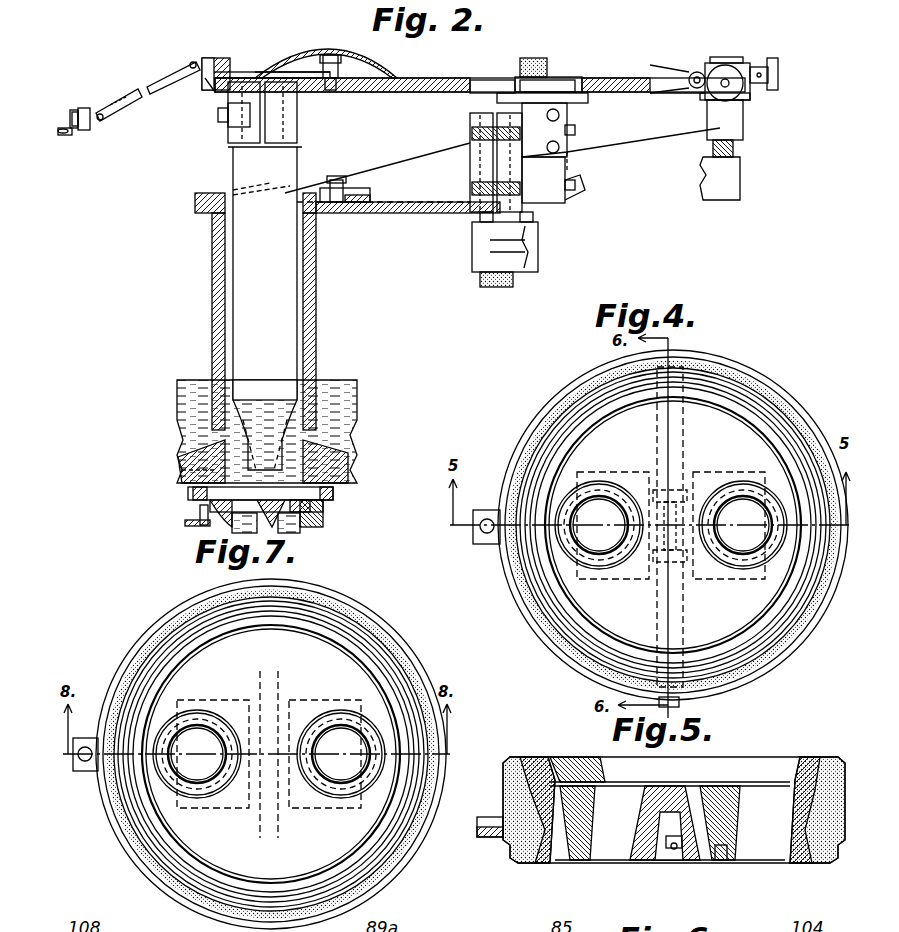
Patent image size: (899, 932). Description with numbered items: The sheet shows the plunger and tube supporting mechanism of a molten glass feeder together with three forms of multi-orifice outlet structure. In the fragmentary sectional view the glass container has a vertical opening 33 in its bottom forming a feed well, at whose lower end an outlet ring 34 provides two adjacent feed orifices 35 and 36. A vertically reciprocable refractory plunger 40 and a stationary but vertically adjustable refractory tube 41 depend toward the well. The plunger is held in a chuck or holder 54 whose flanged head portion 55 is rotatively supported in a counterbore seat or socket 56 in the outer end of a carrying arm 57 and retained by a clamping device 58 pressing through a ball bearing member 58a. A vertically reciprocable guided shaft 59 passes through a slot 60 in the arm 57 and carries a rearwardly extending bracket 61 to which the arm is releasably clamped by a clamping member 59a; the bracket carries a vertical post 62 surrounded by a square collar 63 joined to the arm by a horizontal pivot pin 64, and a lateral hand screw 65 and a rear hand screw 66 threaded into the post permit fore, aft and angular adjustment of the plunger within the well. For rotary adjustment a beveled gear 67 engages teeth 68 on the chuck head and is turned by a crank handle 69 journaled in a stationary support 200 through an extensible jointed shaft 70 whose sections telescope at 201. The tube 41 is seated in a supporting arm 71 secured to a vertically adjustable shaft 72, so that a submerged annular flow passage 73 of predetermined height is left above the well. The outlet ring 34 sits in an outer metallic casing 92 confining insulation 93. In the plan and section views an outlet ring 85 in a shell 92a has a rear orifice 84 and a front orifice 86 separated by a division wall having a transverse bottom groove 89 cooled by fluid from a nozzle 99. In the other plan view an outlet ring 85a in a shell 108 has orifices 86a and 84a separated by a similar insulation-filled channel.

In FIG. 2, the vertical opening 33 is at (190, 475).
In FIG. 2, the outlet ring 34 is at (212, 515).
In FIG. 2, the feed orifice 35 is at (200, 524).
In FIG. 2, the feed orifice 36 is at (323, 510).
In FIG. 2, the plunger 40 is at (250, 278).
In FIG. 2, the tube 41 is at (212, 252).
In FIG. 2, the chuck or holder 54 is at (300, 108).
In FIG. 2, the flanged head portion 55 is at (240, 72).
In FIG. 2, the counterbore seat or socket 56 is at (214, 92).
In FIG. 2, the carrying arm 57 is at (396, 88).
In FIG. 2, the clamping device 58 is at (300, 62).
In FIG. 2, the ball bearing member 58a is at (262, 70).
In FIG. 2, the guided shaft 59 is at (540, 162).
In FIG. 2, the clamping member 59a is at (548, 72).
In FIG. 2, the slot 60 is at (490, 80).
In FIG. 2, the bracket 61 is at (642, 145).
In FIG. 2, the vertical post 62 is at (735, 148).
In FIG. 2, the square collar 63 is at (740, 62).
In FIG. 2, the horizontal hinge or pivot pin 64 is at (694, 72).
In FIG. 2, the lateral hand screw 65 is at (726, 83).
In FIG. 2, the rear hand screw 66 is at (778, 62).
In FIG. 2, the beveled gear 67 is at (222, 58).
In FIG. 2, the teeth 68 is at (200, 78).
In FIG. 2, the handle 69 is at (62, 128).
In FIG. 2, the extensible jointed shaft 70 is at (132, 90).
In FIG. 2, the supporting arm 71 is at (408, 213).
In FIG. 2, the vertically adjustable shaft 72 is at (485, 275).
In FIG. 2, the submerged annular flow passage 73 is at (318, 433).
In FIG. 4, the rear orifice 84 is at (732, 500).
In FIG. 5, the rear orifice 84 is at (725, 862).
In FIG. 7, the orifice 84a is at (332, 727).
In FIG. 4, the outlet ring 85 is at (740, 400).
In FIG. 5, the outlet ring 85 is at (545, 828).
In FIG. 7, the outlet ring 85a is at (312, 655).
In FIG. 4, the front orifice 86 is at (592, 545).
In FIG. 5, the front orifice 86 is at (585, 862).
In FIG. 7, the orifice 86a is at (188, 775).
In FIG. 4, the transverse bottom groove or recess 89 is at (690, 620).
In FIG. 5, the transverse bottom groove or recess 89 is at (660, 850).
In FIG. 2, the outer metallic casing 92 is at (323, 504).
In FIG. 4, the shell 92a is at (500, 546).
In FIG. 5, the shell 92a is at (503, 770).
In FIG. 2, the insulation 93 is at (333, 492).
In FIG. 5, the nozzle 99 is at (670, 848).
In FIG. 7, the shell 108 is at (107, 813).
In FIG. 2, the stationary support 200 is at (88, 130).
In FIG. 2, the telescopically engaged end portions 201 is at (116, 100).